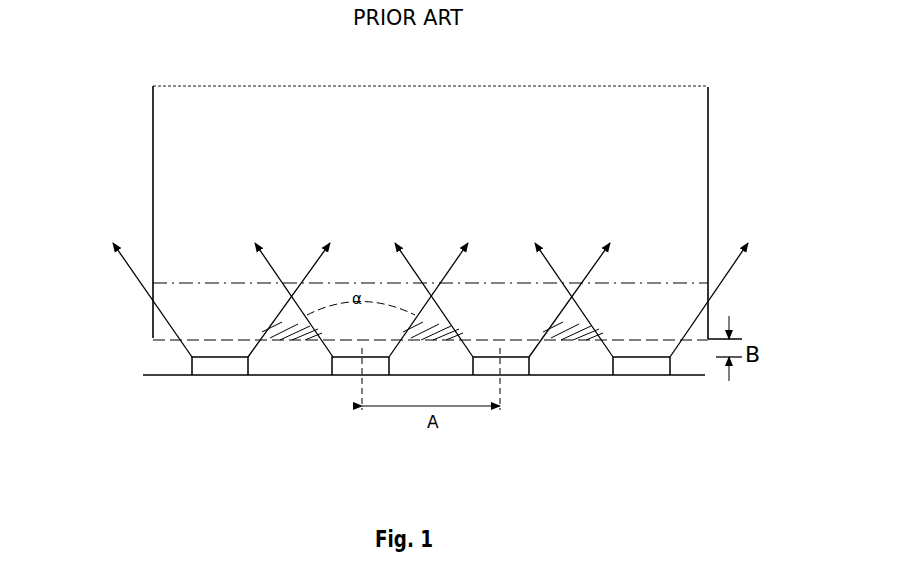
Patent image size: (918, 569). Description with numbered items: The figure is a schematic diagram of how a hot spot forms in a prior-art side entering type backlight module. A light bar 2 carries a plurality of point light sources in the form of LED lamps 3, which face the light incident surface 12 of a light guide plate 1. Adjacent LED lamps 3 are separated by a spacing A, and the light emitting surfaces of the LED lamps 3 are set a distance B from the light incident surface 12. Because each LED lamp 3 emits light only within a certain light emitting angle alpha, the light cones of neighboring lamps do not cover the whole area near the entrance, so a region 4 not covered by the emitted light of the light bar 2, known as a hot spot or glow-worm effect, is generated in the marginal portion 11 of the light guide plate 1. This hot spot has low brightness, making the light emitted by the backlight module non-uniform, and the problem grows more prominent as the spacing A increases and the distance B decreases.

The light guide plate 1 is at (180, 212).
The marginal portion of light guide plate 11 is at (670, 309).
The light incident surface 12 is at (170, 340).
The light bar 2 is at (177, 375).
The LED lamp 3 is at (640, 368).
The region not covered by emitted light of light bars 4 is at (285, 333).